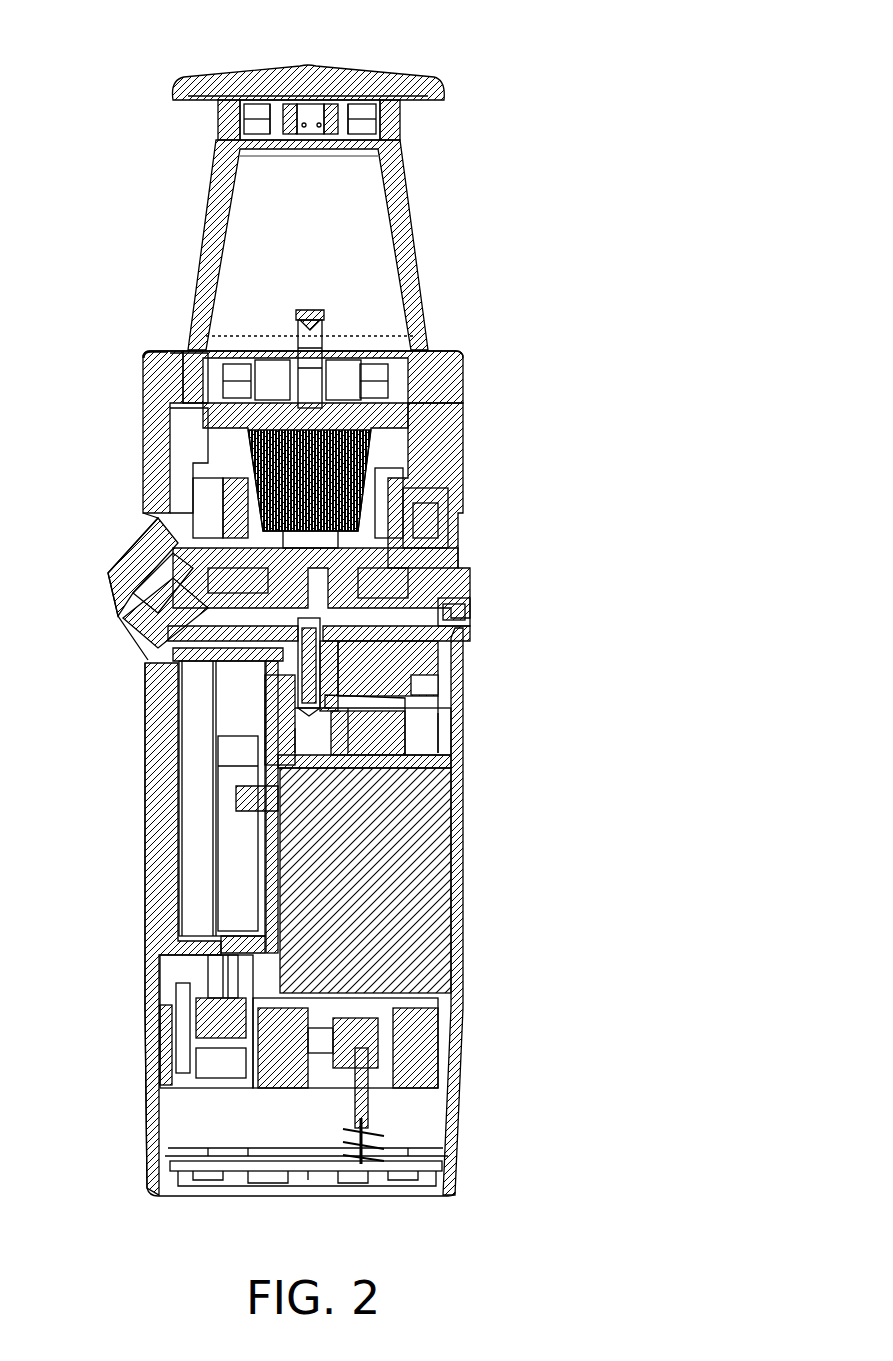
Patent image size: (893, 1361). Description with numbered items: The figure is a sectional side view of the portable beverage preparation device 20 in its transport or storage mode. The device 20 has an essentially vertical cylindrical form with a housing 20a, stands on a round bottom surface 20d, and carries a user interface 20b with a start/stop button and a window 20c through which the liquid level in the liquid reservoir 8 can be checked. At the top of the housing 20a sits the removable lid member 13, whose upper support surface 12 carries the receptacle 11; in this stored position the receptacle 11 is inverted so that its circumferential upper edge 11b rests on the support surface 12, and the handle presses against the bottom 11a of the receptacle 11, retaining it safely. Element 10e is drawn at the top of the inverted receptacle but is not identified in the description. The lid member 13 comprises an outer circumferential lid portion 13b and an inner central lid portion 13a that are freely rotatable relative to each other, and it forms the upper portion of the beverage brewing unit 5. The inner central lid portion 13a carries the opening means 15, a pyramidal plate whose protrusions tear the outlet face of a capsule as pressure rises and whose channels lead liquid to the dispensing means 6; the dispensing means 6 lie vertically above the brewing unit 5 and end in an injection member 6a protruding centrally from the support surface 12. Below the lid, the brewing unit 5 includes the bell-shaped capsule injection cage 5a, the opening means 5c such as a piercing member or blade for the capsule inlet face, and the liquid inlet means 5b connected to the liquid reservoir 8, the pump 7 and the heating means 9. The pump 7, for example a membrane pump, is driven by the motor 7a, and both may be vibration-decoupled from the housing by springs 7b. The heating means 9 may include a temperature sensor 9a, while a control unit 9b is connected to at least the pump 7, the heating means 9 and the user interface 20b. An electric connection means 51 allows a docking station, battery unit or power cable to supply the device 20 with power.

The cap 10e is at (248, 74).
The bottom of the receptacle 11a is at (345, 80).
The beverage preparation device 20 is at (496, 100).
The receptacle 11 is at (404, 167).
The circumferential upper edge 11b is at (418, 333).
The liquid dispensing means 6 is at (316, 330).
The injection member 6a is at (296, 313).
The upper support surface 12 is at (184, 345).
The lid member 13 is at (135, 342).
The inner central lid portion 13a is at (178, 346).
The outer circumferential lid portion 13b is at (160, 346).
The capsule injection cage 5a is at (453, 422).
The opening means 5c is at (420, 457).
The opening means 15 is at (386, 410).
The beverage brewing unit 5 is at (547, 342).
The electric connection means 51 is at (465, 604).
The user interface 20b is at (113, 566).
The liquid inlet means 5b is at (125, 607).
The housing 20a is at (137, 684).
The window 20c is at (142, 790).
The liquid reservoir 8 is at (186, 848).
The heating means 9 is at (230, 903).
The temperature sensor 9a is at (227, 787).
The motor 7a is at (440, 801).
The springs 7b is at (404, 698).
The pump 7 is at (257, 1100).
The control unit 9b is at (291, 1146).
The bottom surface 20d is at (176, 1192).